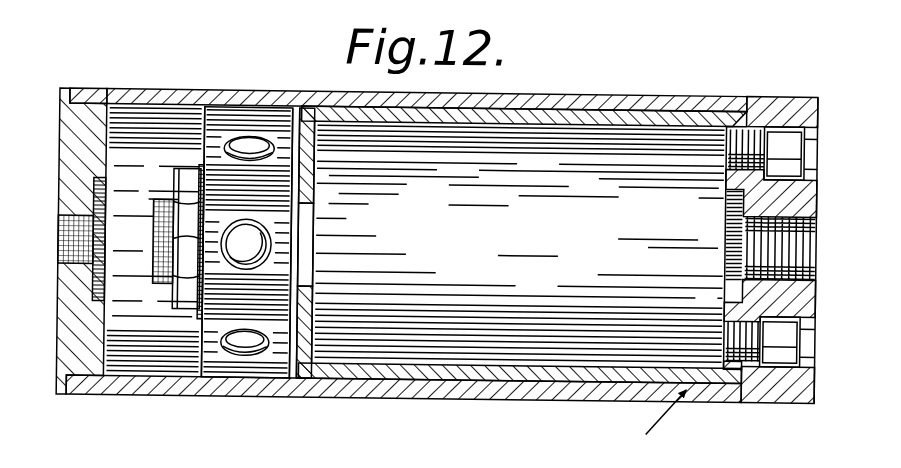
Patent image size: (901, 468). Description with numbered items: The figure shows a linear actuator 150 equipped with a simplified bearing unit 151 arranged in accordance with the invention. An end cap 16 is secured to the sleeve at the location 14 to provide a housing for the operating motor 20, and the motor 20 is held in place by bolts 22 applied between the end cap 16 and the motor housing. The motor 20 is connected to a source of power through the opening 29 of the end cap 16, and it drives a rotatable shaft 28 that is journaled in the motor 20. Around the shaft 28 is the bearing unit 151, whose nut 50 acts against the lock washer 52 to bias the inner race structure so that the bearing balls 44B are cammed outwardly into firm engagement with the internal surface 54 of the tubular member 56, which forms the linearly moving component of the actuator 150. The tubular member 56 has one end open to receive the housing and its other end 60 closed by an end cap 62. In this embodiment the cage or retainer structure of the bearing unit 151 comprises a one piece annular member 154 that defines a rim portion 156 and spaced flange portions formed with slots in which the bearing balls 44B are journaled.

The end cap 62 is at (59, 85).
The end 60 is at (97, 88).
The internal surface 54 is at (178, 90).
The bearing balls 44B is at (259, 133).
The tubular member 56 is at (549, 92).
The end cap 16 is at (805, 94).
The bolts 22 is at (795, 133).
The opening 29 is at (800, 262).
The securing location 14 is at (731, 122).
The one piece annular member 154 is at (280, 172).
The rim portion 156 is at (257, 193).
The shaft 28 is at (305, 221).
The nut 50 is at (185, 185).
The lock washer 52 is at (200, 236).
The bearing unit 151 is at (199, 362).
The linear actuator 150 is at (196, 401).
The operating motor 20 is at (569, 358).